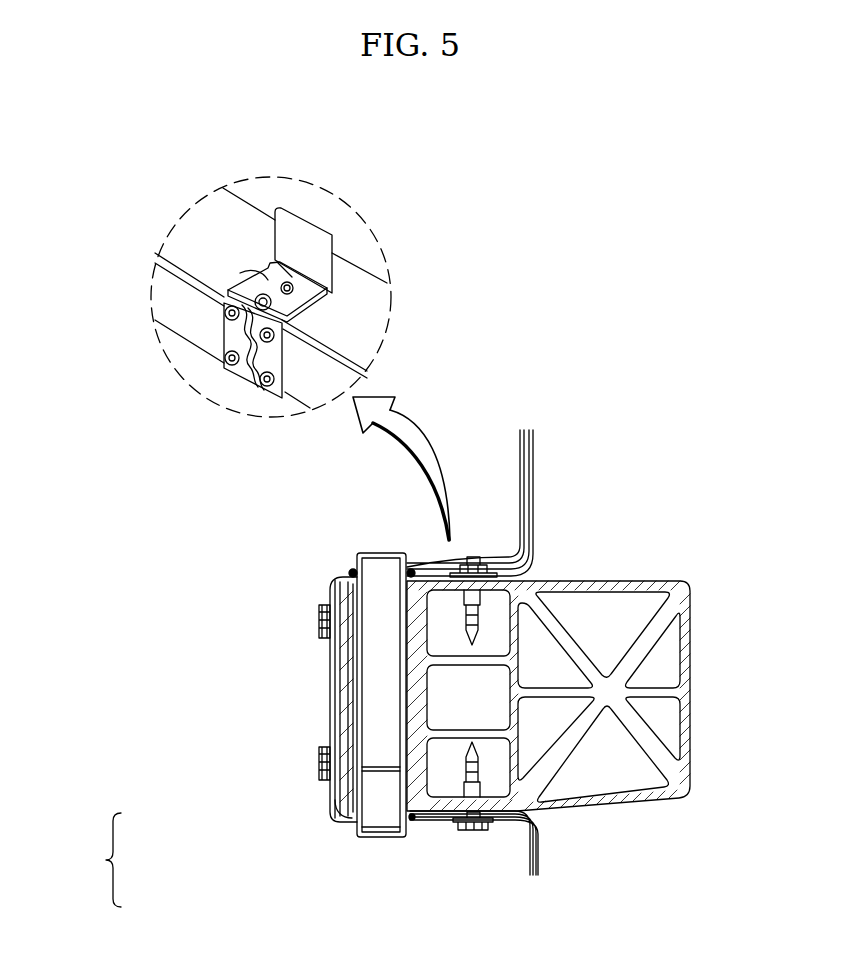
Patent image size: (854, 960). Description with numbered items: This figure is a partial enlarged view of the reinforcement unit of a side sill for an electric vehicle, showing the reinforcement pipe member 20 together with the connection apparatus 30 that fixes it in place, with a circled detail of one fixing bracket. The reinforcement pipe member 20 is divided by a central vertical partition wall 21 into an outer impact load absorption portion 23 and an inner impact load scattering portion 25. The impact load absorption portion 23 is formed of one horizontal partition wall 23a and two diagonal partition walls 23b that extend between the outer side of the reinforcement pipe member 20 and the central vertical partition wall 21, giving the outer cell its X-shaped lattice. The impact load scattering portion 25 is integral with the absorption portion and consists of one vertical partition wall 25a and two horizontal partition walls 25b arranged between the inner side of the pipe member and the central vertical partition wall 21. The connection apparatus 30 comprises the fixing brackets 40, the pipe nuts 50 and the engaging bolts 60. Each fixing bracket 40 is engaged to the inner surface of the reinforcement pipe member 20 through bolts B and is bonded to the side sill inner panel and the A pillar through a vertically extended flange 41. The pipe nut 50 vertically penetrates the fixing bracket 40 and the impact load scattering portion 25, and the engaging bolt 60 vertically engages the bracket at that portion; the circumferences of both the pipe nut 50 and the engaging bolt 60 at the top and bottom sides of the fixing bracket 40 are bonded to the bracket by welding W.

The reinforcement pipe member 20 is at (362, 318).
The central vertical partition wall 21 is at (577, 650).
The impact load absorption portion 23 is at (690, 800).
The horizontal partition wall 23a is at (653, 695).
The diagonal partition walls 23b is at (653, 632).
The impact load scattering portion 25 is at (338, 800).
The vertical partition wall 25a is at (427, 778).
The horizontal partition walls 25b is at (463, 662).
The connection apparatus 30 is at (115, 859).
The fixing bracket 40 is at (233, 340).
The vertically extended flange 41 is at (302, 237).
The pipe nut 50 is at (257, 297).
The engaging bolt 60 is at (483, 563).
The bolt B is at (230, 357).
The welding W is at (300, 288).